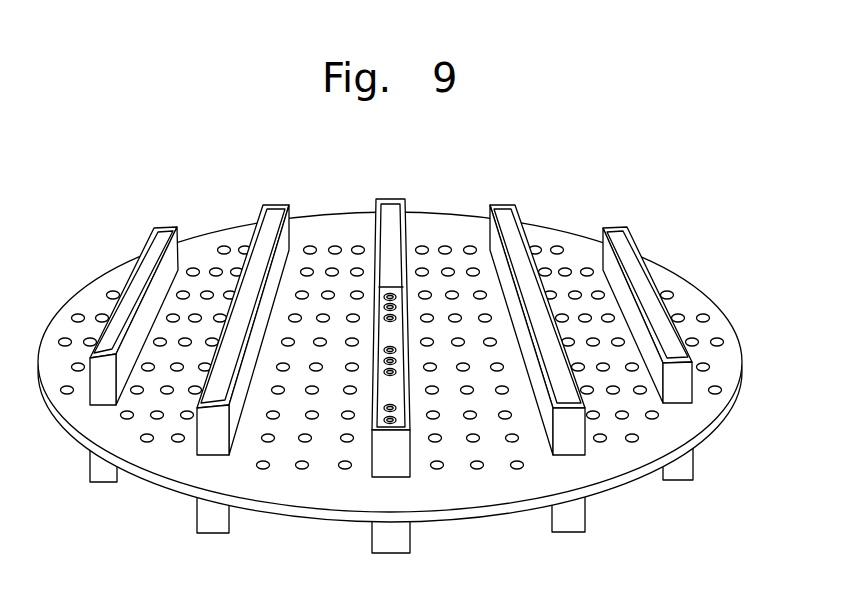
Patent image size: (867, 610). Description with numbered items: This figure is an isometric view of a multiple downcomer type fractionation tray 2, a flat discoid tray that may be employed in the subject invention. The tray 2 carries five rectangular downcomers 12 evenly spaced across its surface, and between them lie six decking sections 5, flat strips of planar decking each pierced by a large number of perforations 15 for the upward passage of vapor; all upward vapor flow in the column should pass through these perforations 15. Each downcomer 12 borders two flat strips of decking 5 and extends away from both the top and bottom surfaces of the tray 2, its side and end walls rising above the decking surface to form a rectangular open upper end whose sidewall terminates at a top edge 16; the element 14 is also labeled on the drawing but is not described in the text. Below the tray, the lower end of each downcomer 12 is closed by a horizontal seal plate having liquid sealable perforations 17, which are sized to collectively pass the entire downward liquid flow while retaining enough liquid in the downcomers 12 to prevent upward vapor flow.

The multiple downcomer fractionation tray 2 is at (722, 300).
The decking section 5 is at (574, 257).
The rectangular downcomer 12 is at (103, 470).
The channel bar 14 is at (178, 252).
The perforations 15 is at (424, 250).
The top edge 16 is at (650, 270).
The liquid sealable perforations 17 is at (392, 292).